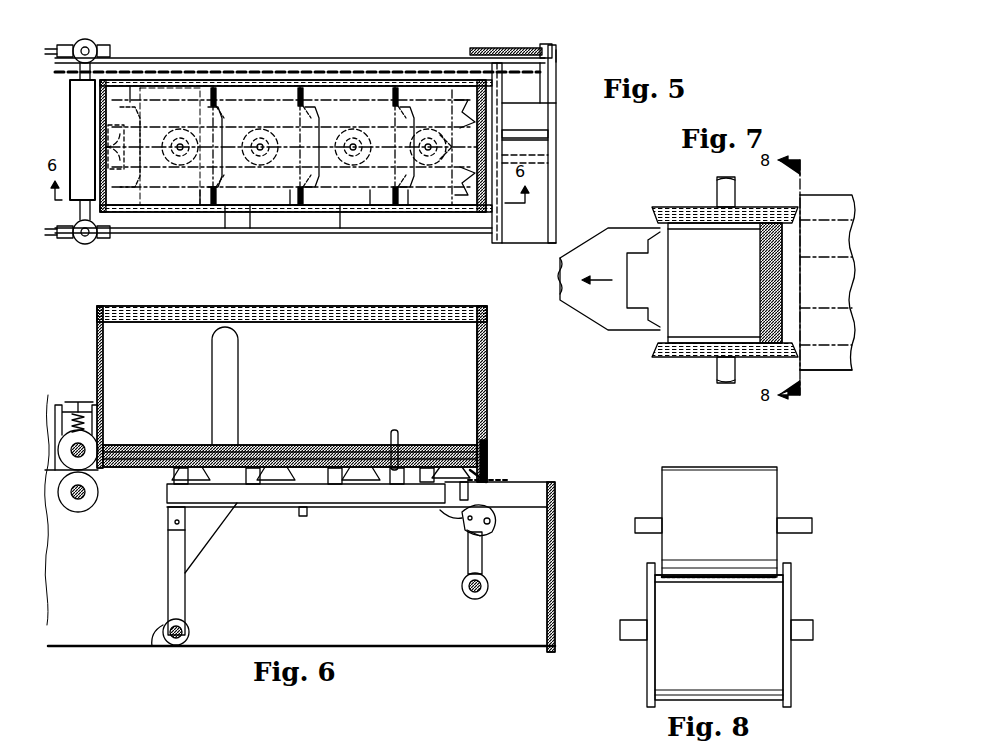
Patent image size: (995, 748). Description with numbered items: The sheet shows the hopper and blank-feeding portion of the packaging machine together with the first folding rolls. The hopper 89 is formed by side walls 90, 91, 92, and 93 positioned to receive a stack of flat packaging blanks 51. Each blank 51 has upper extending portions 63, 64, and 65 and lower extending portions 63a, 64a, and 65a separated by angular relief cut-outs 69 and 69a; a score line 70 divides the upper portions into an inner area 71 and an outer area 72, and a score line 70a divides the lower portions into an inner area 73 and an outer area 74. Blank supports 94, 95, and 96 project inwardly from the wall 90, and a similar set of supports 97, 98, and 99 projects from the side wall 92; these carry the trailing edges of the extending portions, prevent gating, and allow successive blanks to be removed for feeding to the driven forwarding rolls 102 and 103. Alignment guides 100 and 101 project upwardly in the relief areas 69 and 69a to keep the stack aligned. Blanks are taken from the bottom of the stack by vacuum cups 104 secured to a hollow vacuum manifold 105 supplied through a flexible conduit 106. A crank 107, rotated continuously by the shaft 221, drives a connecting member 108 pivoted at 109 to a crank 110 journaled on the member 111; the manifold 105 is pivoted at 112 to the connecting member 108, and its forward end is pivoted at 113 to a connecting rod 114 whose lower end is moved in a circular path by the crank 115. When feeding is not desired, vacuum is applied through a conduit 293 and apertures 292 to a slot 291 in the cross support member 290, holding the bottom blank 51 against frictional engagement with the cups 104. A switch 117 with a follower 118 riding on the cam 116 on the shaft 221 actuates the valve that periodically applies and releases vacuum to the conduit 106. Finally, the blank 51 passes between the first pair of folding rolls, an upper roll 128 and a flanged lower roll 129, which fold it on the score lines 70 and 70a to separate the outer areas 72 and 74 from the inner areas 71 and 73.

In FIG. 5, the packaging blank 51 is at (318, 156).
In FIG. 6, the packaging blank 51 is at (422, 450).
In FIG. 7, the packaging blank 51 is at (818, 200).
In FIG. 8, the packaging blank 51 is at (695, 590).
In FIG. 5, the extending portion 63 is at (150, 74).
In FIG. 5, the extending portion 63a is at (160, 206).
In FIG. 5, the extending portion 64 is at (250, 92).
In FIG. 5, the extending portion 64a is at (250, 215).
In FIG. 5, the extending portion 65 is at (330, 96).
In FIG. 5, the extending portion 65a is at (340, 215).
In FIG. 5, the angular relief cut-out 69 is at (393, 128).
In FIG. 5, the angular relief cut-out 69a is at (388, 170).
In FIG. 7, the score line 70 is at (842, 214).
In FIG. 8, the score line 70 is at (790, 588).
In FIG. 7, the score line 70a is at (828, 362).
In FIG. 8, the score line 70a is at (655, 583).
In FIG. 7, the inner area 71 is at (840, 241).
In FIG. 7, the outer area 72 is at (838, 205).
In FIG. 7, the inner area 73 is at (840, 326).
In FIG. 7, the outer area 74 is at (845, 351).
In FIG. 5, the hopper 89 is at (400, 212).
In FIG. 6, the hopper 89 is at (487, 378).
In FIG. 5, the side wall 90 is at (235, 207).
In FIG. 5, the side wall 91 is at (487, 128).
In FIG. 6, the side wall 91 is at (486, 342).
In FIG. 5, the side wall 92 is at (236, 86).
In FIG. 6, the side wall 92 is at (335, 363).
In FIG. 5, the side wall 93 is at (118, 212).
In FIG. 6, the side wall 93 is at (97, 346).
In FIG. 5, the blank support 94 is at (205, 198).
In FIG. 6, the blank support 94 is at (200, 448).
In FIG. 5, the blank support 95 is at (290, 200).
In FIG. 6, the blank support 95 is at (282, 448).
In FIG. 5, the blank support 96 is at (372, 205).
In FIG. 6, the blank support 96 is at (380, 450).
In FIG. 5, the support 97 is at (195, 80).
In FIG. 5, the support 98 is at (300, 88).
In FIG. 5, the support 99 is at (385, 92).
In FIG. 5, the alignment guide 100 is at (410, 200).
In FIG. 6, the alignment guide 100 is at (396, 430).
In FIG. 5, the alignment guide 101 is at (405, 88).
In FIG. 5, the driven forwarding roll 102 is at (102, 172).
In FIG. 6, the driven forwarding roll 102 is at (60, 425).
In FIG. 6, the driven forwarding roll 103 is at (85, 504).
In FIG. 5, the vacuum cup 104 is at (178, 114).
In FIG. 6, the vacuum cup 104 is at (170, 472).
In FIG. 6, the vacuum manifold 105 is at (325, 500).
In FIG. 6, the flexible conduit 106 is at (304, 518).
In FIG. 6, the crank 107 is at (490, 508).
In FIG. 6, the connecting member 108 is at (490, 530).
In FIG. 6, the pivot 109 is at (468, 534).
In FIG. 6, the crank 110 is at (484, 560).
In FIG. 6, the member 111 is at (466, 592).
In FIG. 6, the pivot 112 is at (457, 518).
In FIG. 6, the pivot 113 is at (180, 522).
In FIG. 6, the connecting rod 114 is at (186, 587).
In FIG. 6, the crank 115 is at (175, 646).
In FIG. 5, the cam 116 is at (548, 46).
In FIG. 5, the switch 117 is at (556, 56).
In FIG. 5, the follower 118 is at (542, 68).
In FIG. 7, the upper roll 128 is at (662, 322).
In FIG. 8, the upper roll 128 is at (748, 475).
In FIG. 7, the flanged lower roll 129 is at (684, 357).
In FIG. 8, the flanged lower roll 129 is at (765, 620).
In FIG. 5, the shaft 221 is at (556, 110).
In FIG. 5, the cross support member 290 is at (470, 215).
In FIG. 6, the cross support member 290 is at (490, 470).
In FIG. 5, the slot 291 is at (556, 157).
In FIG. 6, the slot 291 is at (484, 442).
In FIG. 5, the apertures 292 is at (556, 138).
In FIG. 6, the apertures 292 is at (504, 478).
In FIG. 6, the conduit 293 is at (470, 494).